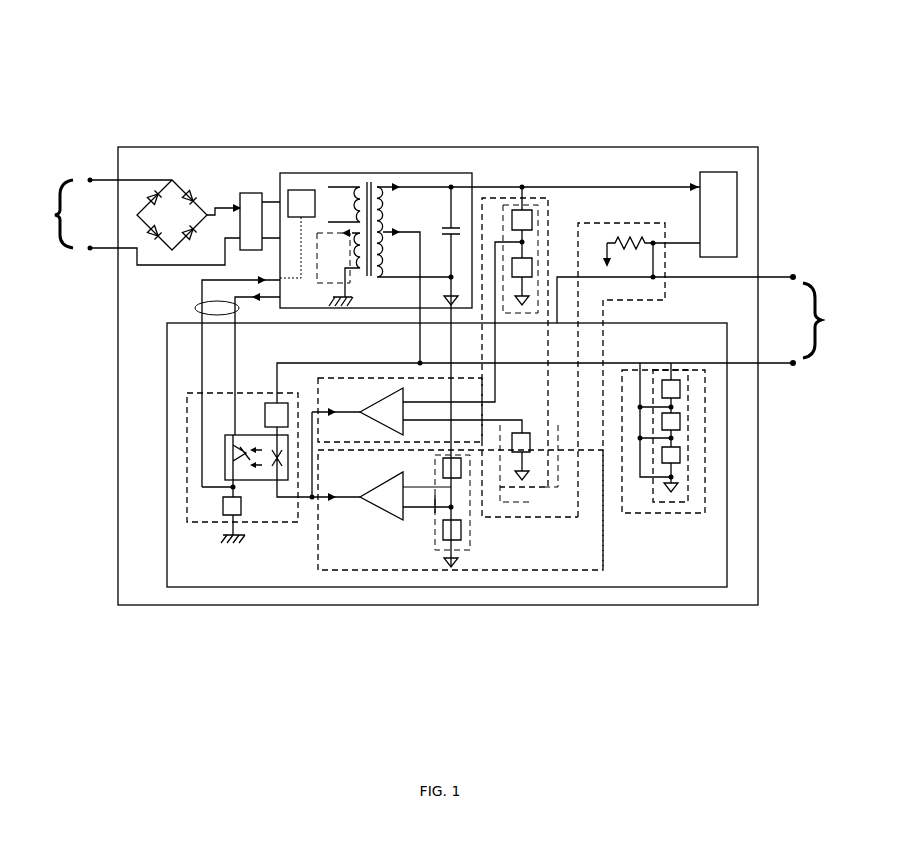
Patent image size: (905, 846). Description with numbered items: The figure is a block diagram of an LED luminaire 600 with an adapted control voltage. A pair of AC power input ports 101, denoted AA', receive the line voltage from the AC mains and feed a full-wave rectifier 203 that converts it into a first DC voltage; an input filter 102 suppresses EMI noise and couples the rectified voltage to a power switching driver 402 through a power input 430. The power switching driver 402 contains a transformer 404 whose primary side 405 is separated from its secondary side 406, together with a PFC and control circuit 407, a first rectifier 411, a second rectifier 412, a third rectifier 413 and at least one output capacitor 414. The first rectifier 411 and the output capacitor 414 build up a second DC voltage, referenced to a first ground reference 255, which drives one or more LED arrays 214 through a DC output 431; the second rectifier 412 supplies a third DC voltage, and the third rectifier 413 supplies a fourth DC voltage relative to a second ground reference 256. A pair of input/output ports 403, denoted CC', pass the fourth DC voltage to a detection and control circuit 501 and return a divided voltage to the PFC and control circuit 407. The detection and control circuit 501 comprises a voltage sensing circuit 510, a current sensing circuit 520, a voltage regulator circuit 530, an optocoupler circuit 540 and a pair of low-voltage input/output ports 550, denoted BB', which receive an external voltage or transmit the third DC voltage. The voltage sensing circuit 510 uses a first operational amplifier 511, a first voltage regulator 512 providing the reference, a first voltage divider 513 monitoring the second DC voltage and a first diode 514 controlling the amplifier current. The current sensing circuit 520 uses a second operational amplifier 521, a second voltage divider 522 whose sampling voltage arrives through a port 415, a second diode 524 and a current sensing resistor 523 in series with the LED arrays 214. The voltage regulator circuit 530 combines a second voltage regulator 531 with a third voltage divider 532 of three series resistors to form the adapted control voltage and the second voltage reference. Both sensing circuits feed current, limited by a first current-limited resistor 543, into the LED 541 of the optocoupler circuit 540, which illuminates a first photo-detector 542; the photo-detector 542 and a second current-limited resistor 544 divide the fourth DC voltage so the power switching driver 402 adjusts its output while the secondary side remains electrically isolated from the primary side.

The AC power input ports 101 is at (62, 183).
The input filter 102 is at (240, 190).
The full-wave rectifier 203 is at (167, 172).
The LED arrays 214 is at (710, 170).
The first ground reference 255 is at (448, 422).
The second ground reference 256 is at (333, 302).
The power switching driver 402 is at (286, 169).
The input/output ports 403 is at (196, 308).
The transformer 404 is at (369, 182).
The primary side 405 is at (355, 176).
The secondary side 406 is at (389, 183).
The PFC and control circuit 407 is at (303, 188).
The first rectifier 411 is at (400, 184).
The second rectifier 412 is at (397, 230).
The third rectifier 413 is at (333, 258).
The output capacitor 414 is at (455, 225).
The port 415 is at (405, 358).
The power input 430 is at (270, 196).
The DC output 431 is at (612, 185).
The detection and control circuit 501 is at (427, 590).
The voltage sensing circuit 510 is at (526, 182).
The first operational amplifier 511 is at (395, 425).
The first voltage regulator 512 is at (528, 454).
The first voltage divider 513 is at (537, 213).
The first diode 514 is at (334, 410).
The current sensing circuit 520 is at (548, 578).
The second operational amplifier 521 is at (381, 512).
The second voltage divider 522 is at (459, 542).
The current sensing resistor 523 is at (633, 236).
The second diode 524 is at (334, 500).
The voltage regulator circuit 530 is at (712, 470).
The second voltage regulator 531 is at (640, 442).
The third voltage divider 532 is at (690, 425).
The optocoupler circuit 540 is at (185, 422).
The LED 541 is at (276, 466).
The first photo-detector 542 is at (232, 457).
The first current-limited resistor 543 is at (263, 410).
The second current-limited resistor 544 is at (222, 517).
The low-voltage input/output ports 550 is at (812, 283).
The LED luminaire 600 is at (508, 144).